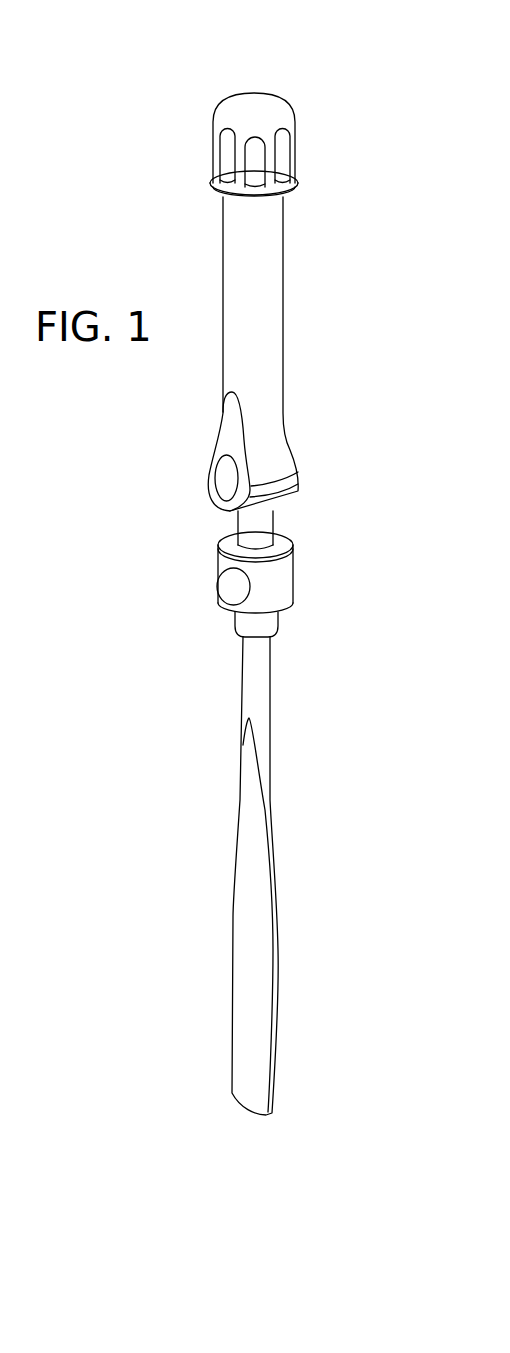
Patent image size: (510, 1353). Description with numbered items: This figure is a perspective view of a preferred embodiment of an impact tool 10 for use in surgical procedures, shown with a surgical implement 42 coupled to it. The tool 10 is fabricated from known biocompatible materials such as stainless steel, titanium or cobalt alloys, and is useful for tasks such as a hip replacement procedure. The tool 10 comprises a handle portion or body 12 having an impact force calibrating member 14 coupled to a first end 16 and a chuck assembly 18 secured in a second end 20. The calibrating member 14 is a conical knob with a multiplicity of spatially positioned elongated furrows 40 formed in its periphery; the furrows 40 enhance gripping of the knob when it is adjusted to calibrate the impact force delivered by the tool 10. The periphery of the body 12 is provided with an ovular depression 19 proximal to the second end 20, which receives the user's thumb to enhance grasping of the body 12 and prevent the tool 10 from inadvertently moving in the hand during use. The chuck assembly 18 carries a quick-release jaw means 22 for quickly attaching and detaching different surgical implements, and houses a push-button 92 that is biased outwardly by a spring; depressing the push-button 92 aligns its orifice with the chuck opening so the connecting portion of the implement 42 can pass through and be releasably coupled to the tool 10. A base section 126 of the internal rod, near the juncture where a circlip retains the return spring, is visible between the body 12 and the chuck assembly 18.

The impact tool 10 is at (352, 286).
The body 12 is at (298, 231).
The impact force calibrating member 14 is at (245, 93).
The first end 16 is at (223, 197).
The chuck assembly 18 is at (302, 578).
The ovular depression 19 is at (222, 478).
The second end 20 is at (299, 495).
The quick-release jaw means 22 is at (282, 622).
The elongated furrows 40 is at (283, 155).
The surgical implement 42 is at (250, 680).
The push-button 92 is at (228, 588).
The base section 126 is at (247, 525).